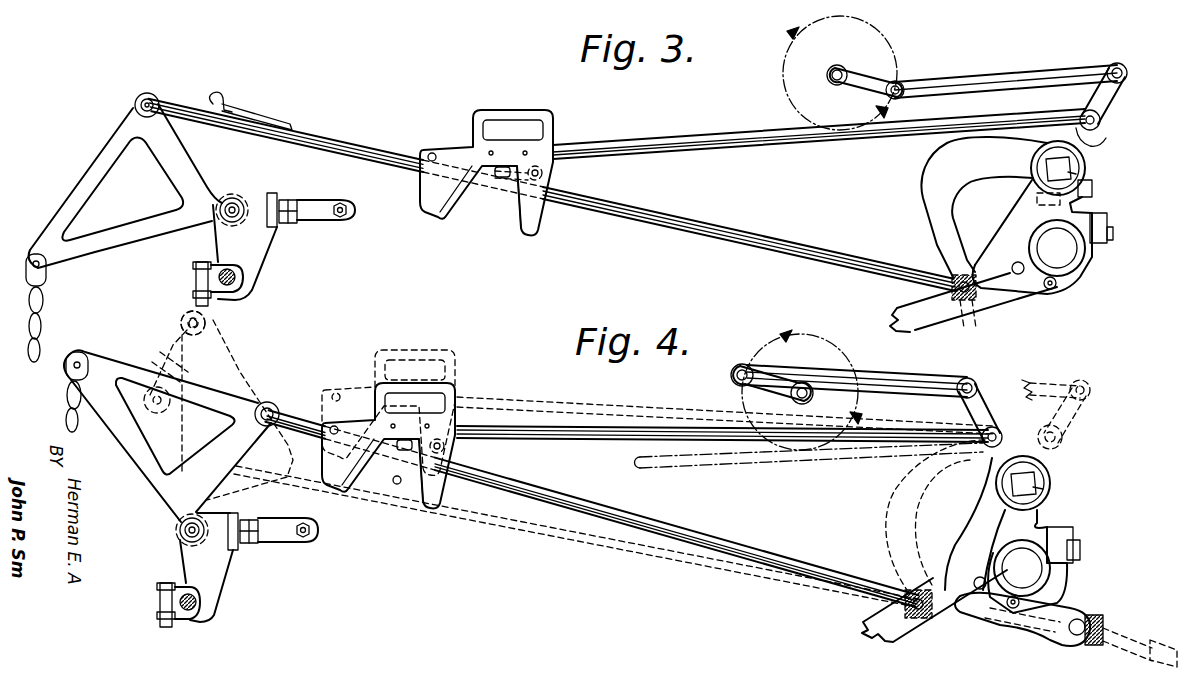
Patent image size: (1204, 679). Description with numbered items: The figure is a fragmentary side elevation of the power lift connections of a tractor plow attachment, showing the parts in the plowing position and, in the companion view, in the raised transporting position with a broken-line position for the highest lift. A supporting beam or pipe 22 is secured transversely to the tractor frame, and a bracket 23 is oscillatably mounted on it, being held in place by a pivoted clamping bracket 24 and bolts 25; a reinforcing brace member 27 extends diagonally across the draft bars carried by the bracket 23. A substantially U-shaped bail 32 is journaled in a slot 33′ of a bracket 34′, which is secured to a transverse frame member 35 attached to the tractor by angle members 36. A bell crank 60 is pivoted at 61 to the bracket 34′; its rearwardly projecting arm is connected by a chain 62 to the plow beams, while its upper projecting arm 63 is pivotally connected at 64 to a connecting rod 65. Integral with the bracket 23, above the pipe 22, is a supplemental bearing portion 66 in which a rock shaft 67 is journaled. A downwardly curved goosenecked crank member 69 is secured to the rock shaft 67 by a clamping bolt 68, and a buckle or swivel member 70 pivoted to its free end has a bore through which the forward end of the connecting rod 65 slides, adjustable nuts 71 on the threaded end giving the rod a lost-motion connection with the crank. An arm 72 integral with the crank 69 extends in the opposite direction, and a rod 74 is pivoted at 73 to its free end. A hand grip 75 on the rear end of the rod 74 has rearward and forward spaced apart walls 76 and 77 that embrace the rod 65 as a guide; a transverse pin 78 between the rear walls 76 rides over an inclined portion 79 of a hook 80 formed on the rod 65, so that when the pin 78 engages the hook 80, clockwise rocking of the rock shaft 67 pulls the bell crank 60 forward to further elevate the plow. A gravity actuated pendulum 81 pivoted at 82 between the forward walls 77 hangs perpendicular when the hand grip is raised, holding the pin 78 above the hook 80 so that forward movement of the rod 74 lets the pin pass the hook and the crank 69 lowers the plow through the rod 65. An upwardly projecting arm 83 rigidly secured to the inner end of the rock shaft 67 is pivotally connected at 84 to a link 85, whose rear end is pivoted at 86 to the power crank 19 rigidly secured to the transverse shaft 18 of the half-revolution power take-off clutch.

In FIG. 3, the transverse shaft 18 is at (832, 68).
In FIG. 4, the transverse shaft 18 is at (812, 397).
In FIG. 3, the crank 19 is at (866, 82).
In FIG. 4, the crank 19 is at (740, 386).
In FIG. 3, the supporting beam or pipe 22 is at (1082, 256).
In FIG. 4, the supporting beam or pipe 22 is at (1052, 568).
In FIG. 3, the bracket 23 is at (1005, 224).
In FIG. 4, the bracket 23 is at (973, 521).
In FIG. 3, the pivoted clamping bracket 24 is at (1072, 289).
In FIG. 4, the pivoted clamping bracket 24 is at (1058, 592).
In FIG. 4, the bolt 25 is at (1077, 545).
In FIG. 3, the reinforcing brace member 27 is at (905, 312).
In FIG. 4, the reinforcing brace member 27 is at (890, 642).
In FIG. 3, the U-shaped bail 32 is at (238, 300).
In FIG. 4, the U-shaped bail 32 is at (201, 622).
In FIG. 3, the slot 33′ is at (203, 262).
In FIG. 4, the slot 33′ is at (168, 585).
In FIG. 3, the bracket 34′ is at (256, 258).
In FIG. 4, the bracket 34′ is at (216, 575).
In FIG. 3, the transverse frame member 35 is at (276, 194).
In FIG. 4, the transverse frame member 35 is at (237, 550).
In FIG. 3, the angle member 36 is at (318, 221).
In FIG. 4, the angle member 36 is at (286, 516).
In FIG. 3, the bell crank 60 is at (96, 153).
In FIG. 4, the bell crank 60 is at (124, 454).
In FIG. 3, the pivot 61 is at (235, 203).
In FIG. 4, the pivot 61 is at (180, 531).
In FIG. 3, the chain 62 is at (46, 280).
In FIG. 4, the chain 62 is at (80, 408).
In FIG. 3, the upper projecting arm 63 is at (182, 166).
In FIG. 4, the upper projecting arm 63 is at (236, 448).
In FIG. 3, the pivot 64 is at (151, 98).
In FIG. 4, the pivot 64 is at (274, 407).
In FIG. 3, the connecting rod 65 is at (652, 224).
In FIG. 4, the connecting rod 65 is at (630, 527).
In FIG. 3, the supplemental bearing portion 66 is at (1031, 167).
In FIG. 4, the supplemental bearing portion 66 is at (996, 483).
In FIG. 3, the rock shaft 67 is at (1080, 167).
In FIG. 4, the rock shaft 67 is at (1048, 489).
In FIG. 3, the clamping bolt 68 is at (1093, 195).
In FIG. 3, the goosenecked crank member 69 is at (928, 173).
In FIG. 4, the goosenecked crank member 69 is at (893, 492).
In FIG. 3, the buckle or swivel member 70 is at (964, 300).
In FIG. 4, the buckle or swivel member 70 is at (921, 620).
In FIG. 3, the adjustable nut 71 is at (973, 312).
In FIG. 4, the adjustable nut 71 is at (1155, 632).
In FIG. 3, the arm 72 is at (1096, 138).
In FIG. 3, the pivot 73 is at (1101, 118).
In FIG. 3, the rod 74 is at (794, 150).
In FIG. 4, the rod 74 is at (520, 426).
In FIG. 3, the hand grip 75 is at (508, 110).
In FIG. 4, the hand grip 75 is at (420, 385).
In FIG. 3, the rearward spaced apart walls 76 is at (446, 200).
In FIG. 3, the forward spaced apart walls 77 is at (535, 218).
In FIG. 3, the transverse pin 78 is at (432, 153).
In FIG. 4, the transverse pin 78 is at (338, 393).
In FIG. 3, the inclined portion 79 is at (256, 108).
In FIG. 3, the hook 80 is at (216, 99).
In FIG. 3, the gravity actuated pendulum 81 is at (506, 178).
In FIG. 4, the gravity actuated pendulum 81 is at (400, 451).
In FIG. 3, the pivot 82 is at (543, 173).
In FIG. 4, the pivot 82 is at (445, 446).
In FIG. 3, the upwardly projecting arm 83 is at (1118, 100).
In FIG. 4, the upwardly projecting arm 83 is at (984, 408).
In FIG. 3, the pivot 84 is at (1125, 70).
In FIG. 4, the pivot 84 is at (975, 384).
In FIG. 3, the link 85 is at (1021, 84).
In FIG. 4, the link 85 is at (880, 380).
In FIG. 3, the pivot 86 is at (905, 85).